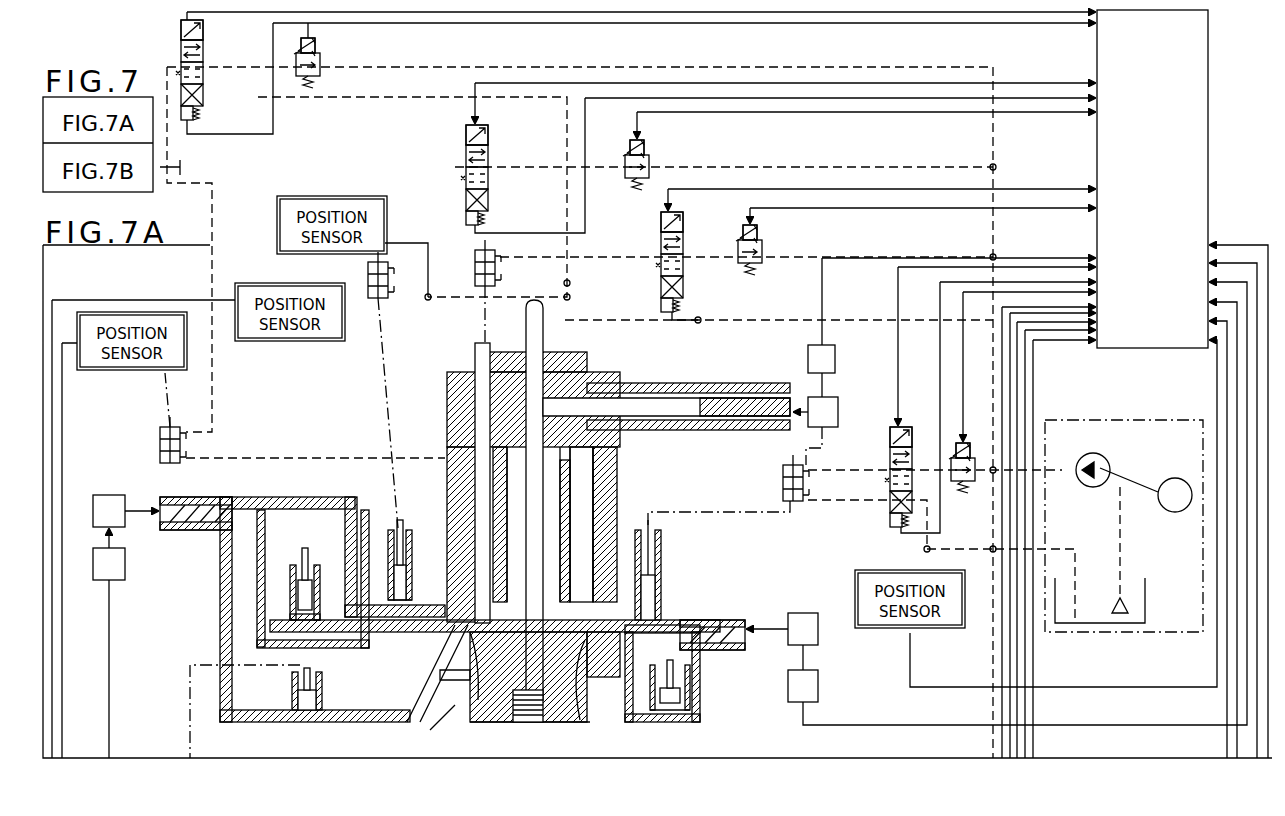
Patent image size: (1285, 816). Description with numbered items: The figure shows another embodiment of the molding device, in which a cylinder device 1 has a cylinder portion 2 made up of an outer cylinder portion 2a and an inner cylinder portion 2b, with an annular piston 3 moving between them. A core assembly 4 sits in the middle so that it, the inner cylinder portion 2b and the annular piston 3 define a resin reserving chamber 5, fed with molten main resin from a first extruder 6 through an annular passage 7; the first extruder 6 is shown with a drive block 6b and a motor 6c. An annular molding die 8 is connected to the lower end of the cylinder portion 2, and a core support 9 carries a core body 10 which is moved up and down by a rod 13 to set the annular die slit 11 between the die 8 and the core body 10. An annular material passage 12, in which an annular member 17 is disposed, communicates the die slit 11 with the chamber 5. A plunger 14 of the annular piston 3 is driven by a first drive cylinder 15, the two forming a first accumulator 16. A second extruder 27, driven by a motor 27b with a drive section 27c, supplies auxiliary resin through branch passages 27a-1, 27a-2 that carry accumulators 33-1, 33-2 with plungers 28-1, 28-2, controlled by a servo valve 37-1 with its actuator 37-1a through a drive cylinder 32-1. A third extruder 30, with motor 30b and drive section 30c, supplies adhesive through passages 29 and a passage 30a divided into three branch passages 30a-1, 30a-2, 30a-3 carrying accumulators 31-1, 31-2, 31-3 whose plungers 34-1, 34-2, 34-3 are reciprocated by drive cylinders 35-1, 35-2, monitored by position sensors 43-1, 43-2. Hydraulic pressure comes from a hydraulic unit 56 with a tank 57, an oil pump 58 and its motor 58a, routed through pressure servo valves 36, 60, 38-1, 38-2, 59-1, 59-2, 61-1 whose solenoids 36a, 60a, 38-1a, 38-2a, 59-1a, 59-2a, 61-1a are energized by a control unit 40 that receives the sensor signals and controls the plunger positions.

The cylinder device 1 is at (590, 360).
The cylinder portion 2 is at (622, 472).
The outer cylinder portion 2a is at (612, 462).
The inner cylinder portion 2b is at (590, 508).
The annular piston 3 is at (581, 524).
The core assembly 4 is at (607, 455).
The resin reserving chamber 5 is at (448, 550).
The first extruder 6 is at (705, 382).
The driver 6b is at (806, 352).
The linkage 6c is at (806, 430).
The annular passage 7 is at (572, 486).
The annular molding die 8 is at (585, 690).
The core support 9 is at (592, 680).
The core body 10 is at (560, 722).
The annular die slit 11 is at (480, 722).
The annular material passage 12 is at (490, 690).
The rod 13 is at (530, 330).
The plunger 14 is at (478, 348).
The first drive cylinder 15 is at (473, 265).
The first accumulator 16 is at (450, 478).
The annular member 17 is at (455, 682).
The second extruder 27 is at (728, 618).
The branch passage 27a-1 is at (665, 625).
The branch passage 27a-2 is at (635, 722).
The motor 27b is at (803, 612).
The drive section 27c is at (820, 686).
The plunger 28-1 is at (655, 524).
The plunger 28-2 is at (672, 660).
The passages 29 is at (448, 605).
The third extruder 30 is at (172, 498).
The passage 30a is at (240, 498).
The branch passage 30a-1 is at (358, 650).
The branch passage 30a-2 is at (285, 650).
The branch passage 30a-3 is at (382, 722).
The motor 30b is at (105, 494).
The drive section 30c is at (126, 562).
The accumulator 31-1 is at (380, 600).
The accumulator 31-2 is at (288, 598).
The accumulator 31-3 is at (295, 700).
The drive cylinder 32-1 is at (781, 482).
The accumulator 33-1 is at (662, 548).
The accumulator 33-2 is at (690, 700).
The plunger 34-1 is at (400, 528).
The plunger 34-2 is at (300, 560).
The plunger 34-3 is at (313, 690).
The drive cylinder 35-1 is at (376, 300).
The drive cylinder 35-2 is at (158, 442).
The pressure servo valve 36 is at (686, 224).
The solenoid 36a is at (660, 222).
The servo valve 37-1 is at (890, 440).
The solenoid 37-1a is at (890, 432).
The pressure servo valve 38-1 is at (464, 155).
The magnetic actuator 38-1a is at (466, 135).
The pressure servo valve 38-2 is at (206, 52).
The solenoid 38-2a is at (200, 30).
The control unit 40 is at (1112, 348).
The position sensor 43-1 is at (256, 283).
The position sensor 43-2 is at (110, 370).
The hydraulic unit 56 is at (1160, 632).
The tank 57 is at (1147, 586).
The oil pump 58 is at (1103, 460).
The motor 58a is at (1175, 478).
The pressure servo valve 59-1 is at (652, 157).
The magnetic actuator 59-1a is at (645, 145).
The pressure servo valve 59-2 is at (322, 62).
The solenoid 59-2a is at (318, 44).
The pressure servo valve 60 is at (765, 250).
The solenoid 60a is at (760, 232).
The pressure control valve 61-1 is at (978, 468).
The valve actuator 61-1a is at (972, 448).